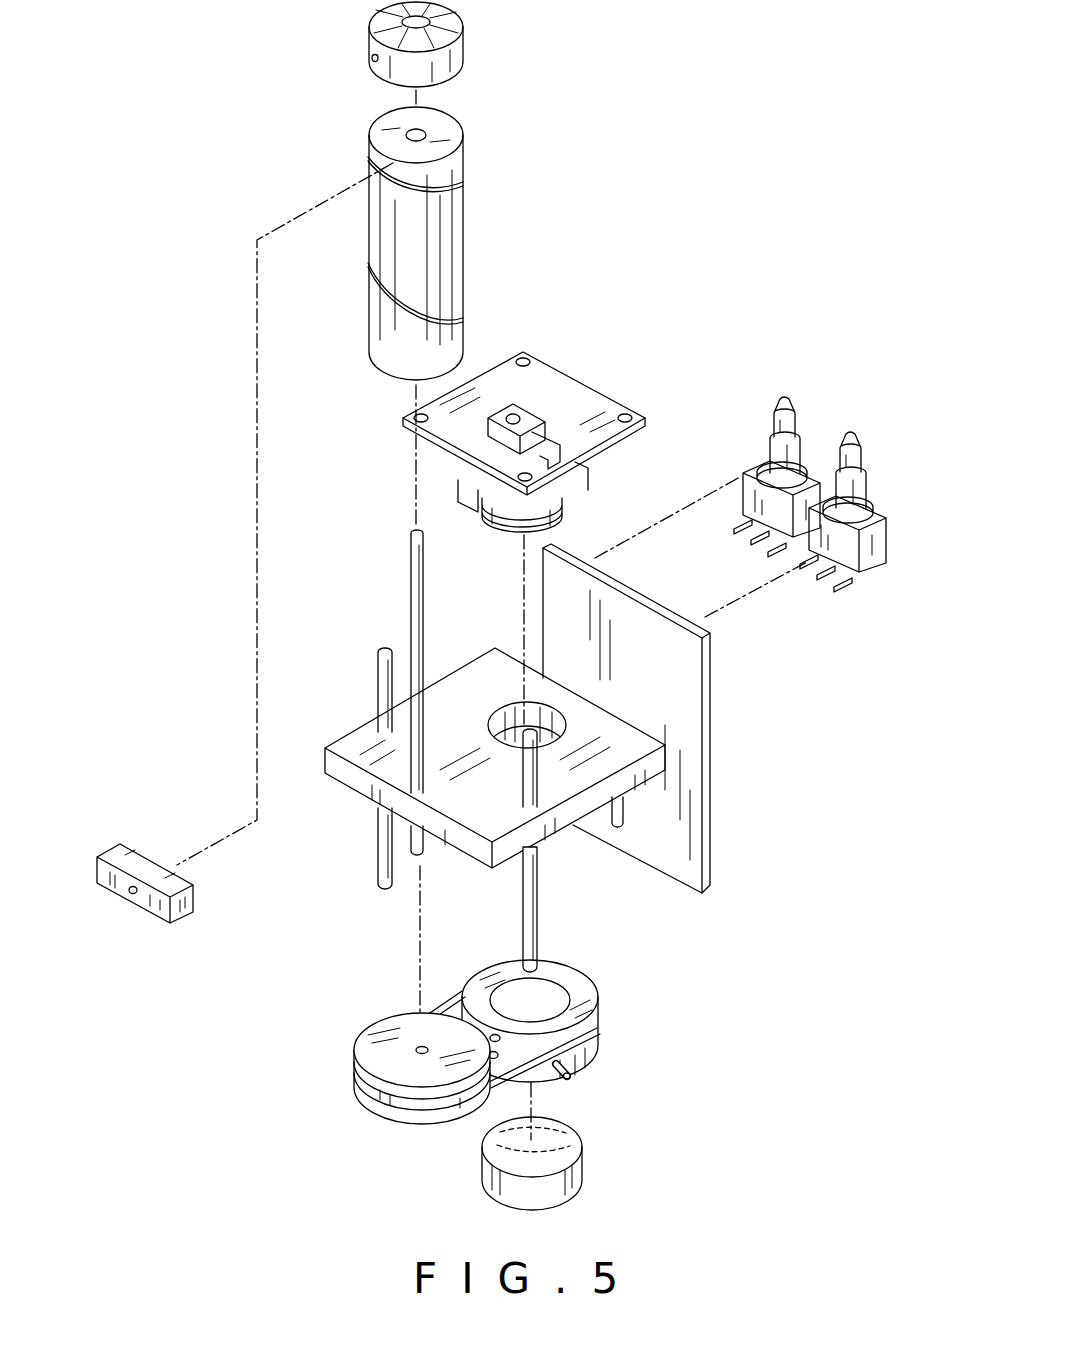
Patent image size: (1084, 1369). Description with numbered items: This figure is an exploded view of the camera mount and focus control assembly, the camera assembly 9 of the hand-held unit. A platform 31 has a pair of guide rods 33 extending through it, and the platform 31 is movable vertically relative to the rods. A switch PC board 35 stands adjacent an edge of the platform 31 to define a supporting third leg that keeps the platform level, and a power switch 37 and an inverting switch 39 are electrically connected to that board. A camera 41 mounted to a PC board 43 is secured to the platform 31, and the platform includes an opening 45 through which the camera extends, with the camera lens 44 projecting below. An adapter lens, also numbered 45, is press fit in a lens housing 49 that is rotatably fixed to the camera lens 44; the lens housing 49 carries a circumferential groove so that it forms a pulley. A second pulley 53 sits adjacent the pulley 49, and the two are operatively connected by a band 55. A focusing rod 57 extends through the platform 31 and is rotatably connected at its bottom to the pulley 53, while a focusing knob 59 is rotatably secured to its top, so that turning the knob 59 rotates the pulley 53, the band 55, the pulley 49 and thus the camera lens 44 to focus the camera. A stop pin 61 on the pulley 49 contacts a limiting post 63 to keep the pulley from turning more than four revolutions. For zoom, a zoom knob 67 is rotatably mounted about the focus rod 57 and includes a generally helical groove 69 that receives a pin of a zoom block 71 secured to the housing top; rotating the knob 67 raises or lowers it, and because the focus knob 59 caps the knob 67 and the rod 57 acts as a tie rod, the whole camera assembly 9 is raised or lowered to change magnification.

The camera assembly 9 is at (528, 283).
The platform 31 is at (480, 677).
The guide rods 33 is at (377, 845).
The switch PC board 35 is at (712, 712).
The power switch 37 is at (795, 423).
The inverting switch 39 is at (860, 457).
The camera 41 is at (628, 470).
The PC board 43 is at (566, 370).
The camera lens 44 is at (562, 513).
The opening 45 is at (500, 724).
The lens housing 49 is at (597, 1040).
The second pulley 53 is at (383, 1118).
The band 55 is at (490, 1085).
The focusing rod 57 is at (424, 546).
The focusing knob 59 is at (463, 50).
The stop pin 61 is at (565, 1076).
The limiting post 63 is at (612, 815).
The zoom knob 67 is at (462, 283).
The helical groove 69 is at (446, 180).
The zoom block 71 is at (108, 848).